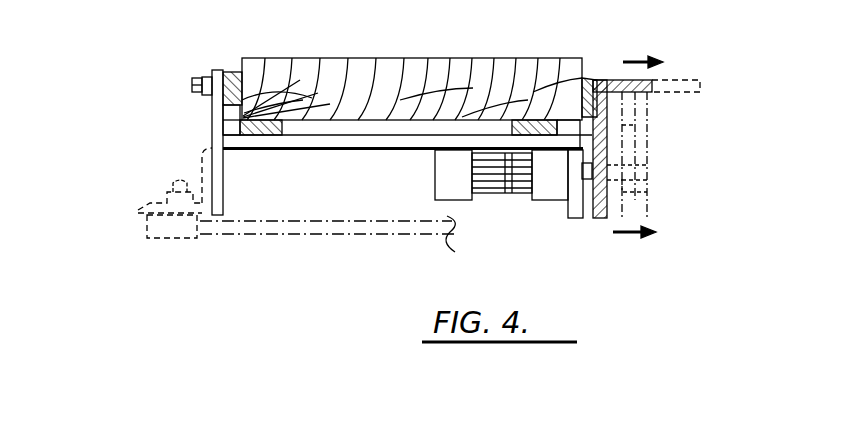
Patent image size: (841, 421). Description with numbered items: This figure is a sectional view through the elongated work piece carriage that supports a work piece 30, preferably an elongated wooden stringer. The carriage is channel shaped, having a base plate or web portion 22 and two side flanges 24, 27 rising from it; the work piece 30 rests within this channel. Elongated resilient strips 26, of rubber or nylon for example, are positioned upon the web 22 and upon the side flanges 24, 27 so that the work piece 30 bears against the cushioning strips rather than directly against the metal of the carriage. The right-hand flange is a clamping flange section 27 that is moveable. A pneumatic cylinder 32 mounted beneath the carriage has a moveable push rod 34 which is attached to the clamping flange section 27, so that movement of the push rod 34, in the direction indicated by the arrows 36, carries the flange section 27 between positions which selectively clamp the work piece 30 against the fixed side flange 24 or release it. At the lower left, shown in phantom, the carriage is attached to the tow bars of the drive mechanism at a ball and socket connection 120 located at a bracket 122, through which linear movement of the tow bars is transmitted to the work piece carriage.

The web portion 22 is at (360, 142).
The side flange 24 is at (217, 123).
The resilient strips 26 is at (242, 72).
The clamping flange section 27 is at (650, 133).
The work piece 30 is at (468, 72).
The pneumatic cylinder 32 is at (503, 172).
The push rod 34 is at (587, 170).
The arrows 36 is at (630, 62).
The ball and socket connection 120 is at (138, 240).
The bracket 122 is at (136, 211).